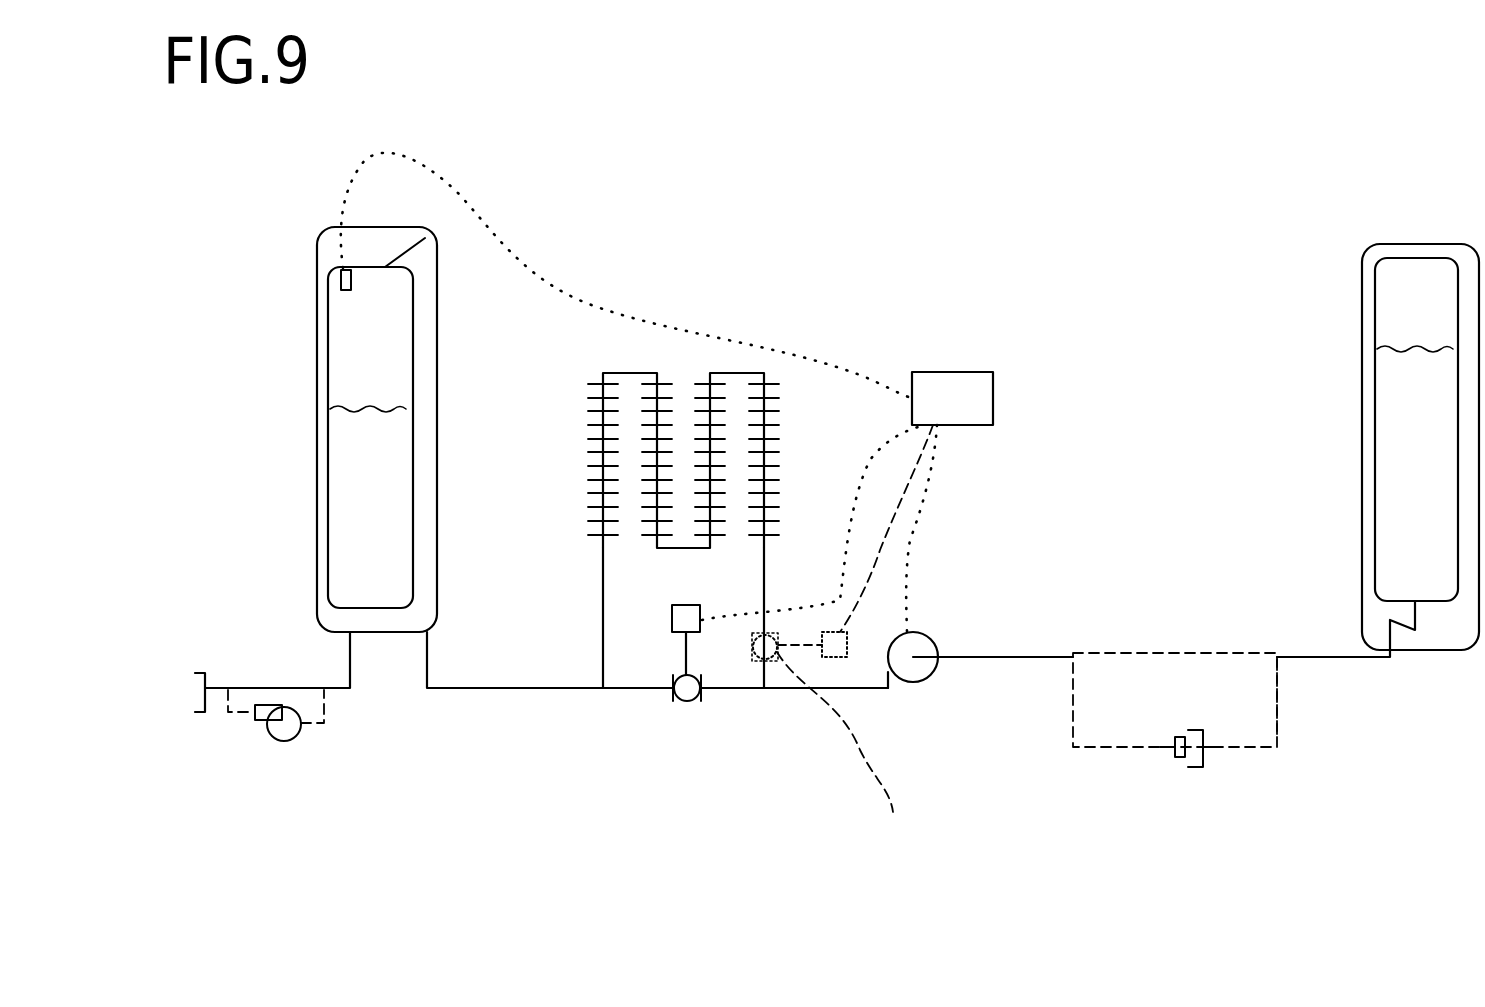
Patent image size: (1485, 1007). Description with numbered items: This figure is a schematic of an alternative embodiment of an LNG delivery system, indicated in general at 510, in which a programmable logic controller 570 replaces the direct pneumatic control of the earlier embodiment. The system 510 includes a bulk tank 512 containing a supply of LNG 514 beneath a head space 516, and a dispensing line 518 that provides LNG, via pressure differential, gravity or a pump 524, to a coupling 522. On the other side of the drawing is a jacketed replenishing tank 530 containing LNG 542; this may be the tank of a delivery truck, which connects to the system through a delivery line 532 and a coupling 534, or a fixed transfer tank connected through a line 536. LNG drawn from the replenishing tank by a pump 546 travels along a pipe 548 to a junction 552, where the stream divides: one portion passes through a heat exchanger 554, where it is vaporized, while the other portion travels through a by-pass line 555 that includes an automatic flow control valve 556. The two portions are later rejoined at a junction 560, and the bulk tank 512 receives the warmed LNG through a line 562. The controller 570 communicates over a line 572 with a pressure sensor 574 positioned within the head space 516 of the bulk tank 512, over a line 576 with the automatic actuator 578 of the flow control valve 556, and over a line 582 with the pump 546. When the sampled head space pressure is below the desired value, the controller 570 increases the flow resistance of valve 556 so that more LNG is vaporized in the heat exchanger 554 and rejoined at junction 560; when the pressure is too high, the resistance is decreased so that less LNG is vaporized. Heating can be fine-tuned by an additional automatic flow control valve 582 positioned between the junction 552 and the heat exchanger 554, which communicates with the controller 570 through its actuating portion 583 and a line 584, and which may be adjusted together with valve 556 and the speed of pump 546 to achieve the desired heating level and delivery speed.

The system 510 is at (838, 116).
The bulk tank 512 is at (318, 457).
The LNG 514 is at (382, 484).
The head space 516 is at (382, 339).
The dispensing line 518 is at (350, 660).
The coupling 522 is at (202, 714).
The pump 524 is at (296, 738).
The jacketed replenishing tank 530 is at (1373, 254).
The delivery line 532 is at (1278, 715).
The coupling 534 is at (1196, 768).
The line 536 is at (1128, 655).
The LNG 542 is at (1430, 406).
The pump 546 is at (930, 681).
The pipe 548 is at (842, 690).
The junction 552 is at (768, 690).
The heat exchanger 554 is at (727, 372).
The by-pass line 555 is at (741, 690).
The automatic flow control valve 556 is at (697, 700).
The junction 560 is at (605, 690).
The line 562 is at (497, 690).
The programmable logic controller 570 is at (945, 426).
The line 572 is at (505, 255).
The pressure sensor 574 is at (343, 283).
The line 576 is at (860, 482).
The automatic actuator 578 is at (686, 604).
The automatic flow control valve 582 is at (908, 560).
The actuating portion 583 is at (848, 640).
The line 584 is at (866, 578).